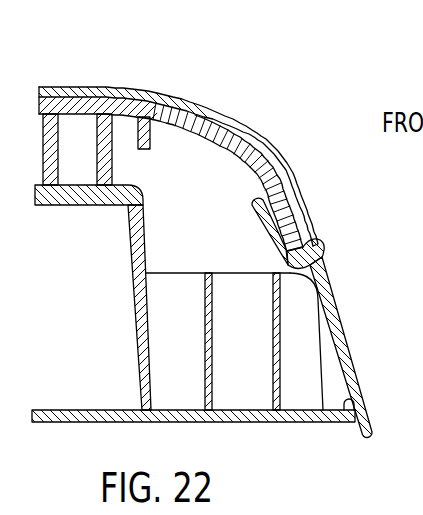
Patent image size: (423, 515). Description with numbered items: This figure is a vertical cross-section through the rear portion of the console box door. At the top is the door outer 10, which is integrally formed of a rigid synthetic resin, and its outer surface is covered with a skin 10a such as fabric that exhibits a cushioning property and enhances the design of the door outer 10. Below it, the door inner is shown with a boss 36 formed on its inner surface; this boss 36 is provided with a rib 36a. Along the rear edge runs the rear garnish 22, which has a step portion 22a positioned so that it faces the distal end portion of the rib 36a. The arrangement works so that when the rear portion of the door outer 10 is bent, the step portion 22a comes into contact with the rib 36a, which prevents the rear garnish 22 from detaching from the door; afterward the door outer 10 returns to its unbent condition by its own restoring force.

The door outer 10 is at (131, 89).
The skin 10a is at (67, 93).
The rear garnish 22 is at (340, 302).
The step portion 22a is at (298, 230).
The boss 36 is at (240, 372).
The rib 36a is at (300, 360).